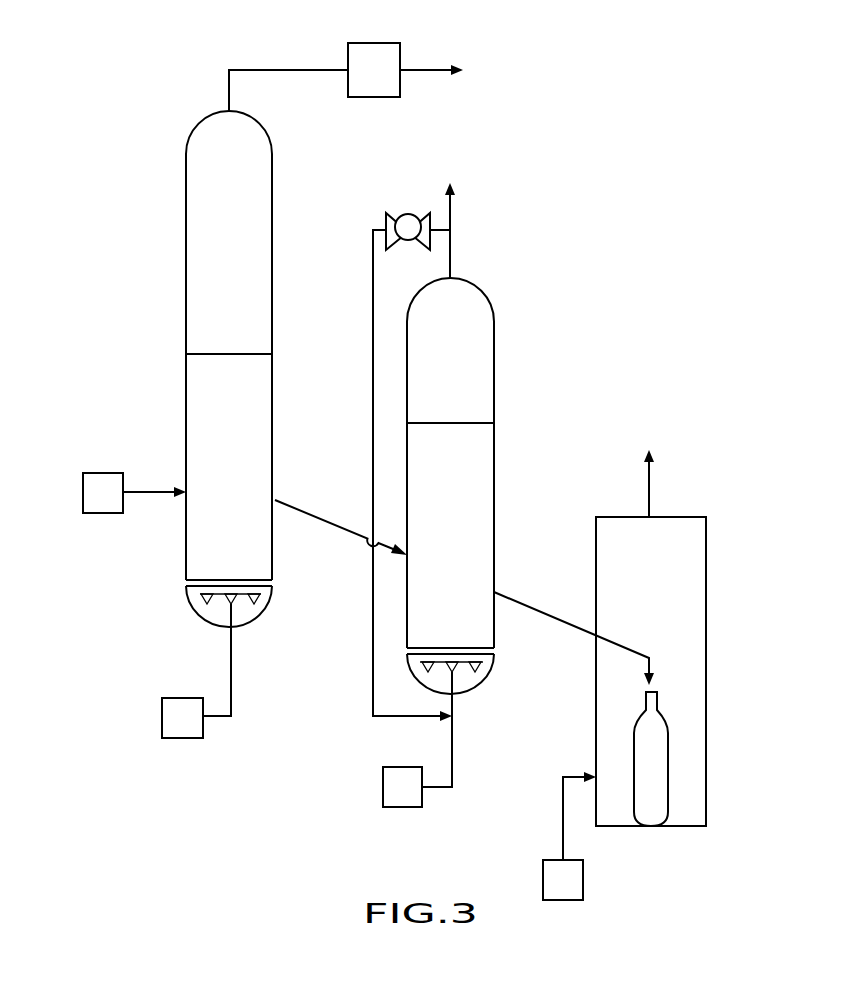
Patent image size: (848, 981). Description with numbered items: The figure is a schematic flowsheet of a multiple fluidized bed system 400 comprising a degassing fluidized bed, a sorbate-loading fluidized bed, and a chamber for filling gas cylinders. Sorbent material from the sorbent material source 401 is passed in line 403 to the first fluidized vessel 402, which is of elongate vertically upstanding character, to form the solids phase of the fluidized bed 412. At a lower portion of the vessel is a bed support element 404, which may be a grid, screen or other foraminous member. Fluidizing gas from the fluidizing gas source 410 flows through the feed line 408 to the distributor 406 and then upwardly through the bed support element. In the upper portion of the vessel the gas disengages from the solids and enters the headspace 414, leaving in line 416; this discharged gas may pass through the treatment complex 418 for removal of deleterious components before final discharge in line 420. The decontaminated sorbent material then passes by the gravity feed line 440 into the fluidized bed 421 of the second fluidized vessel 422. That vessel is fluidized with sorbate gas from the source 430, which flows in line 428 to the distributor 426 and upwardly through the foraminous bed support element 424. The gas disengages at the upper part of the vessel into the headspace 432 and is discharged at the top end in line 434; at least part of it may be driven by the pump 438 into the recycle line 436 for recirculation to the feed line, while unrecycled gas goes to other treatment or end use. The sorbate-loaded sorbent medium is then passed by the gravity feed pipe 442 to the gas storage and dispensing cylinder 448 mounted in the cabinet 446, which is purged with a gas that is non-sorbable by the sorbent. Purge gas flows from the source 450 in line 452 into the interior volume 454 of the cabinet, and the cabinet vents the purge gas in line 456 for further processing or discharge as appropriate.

The multiple fluidized bed system 400 is at (563, 110).
The sorbent material source 401 is at (92, 514).
The first fluidized vessel 402 is at (186, 215).
The line 403 is at (145, 494).
The bed support element 404 is at (190, 593).
The distributor 406 is at (243, 612).
The feed line 408 is at (233, 673).
The fluidizing gas source 410 is at (178, 698).
The fluidized bed 412 is at (193, 397).
The headspace 414 is at (250, 176).
The line 416 is at (285, 68).
The treatment complex 418 is at (368, 43).
The line 420 is at (412, 72).
The fluidized bed 421 is at (482, 518).
The second fluidized vessel 422 is at (496, 458).
The foraminous bed support element 424 is at (494, 668).
The distributor 426 is at (460, 678).
The line 428 is at (454, 779).
The source 430 is at (397, 808).
The headspace 432 is at (485, 342).
The line 434 is at (451, 256).
The recycle line 436 is at (371, 348).
The pump 438 is at (408, 214).
The gravity feed line 440 is at (307, 512).
The gravity feed pipe 442 is at (539, 609).
The cabinet 446 is at (706, 649).
The gas storage and dispensing cylinder 448 is at (665, 768).
The source 450 is at (584, 893).
The line 452 is at (563, 832).
The interior volume 454 is at (692, 536).
The line 456 is at (652, 491).